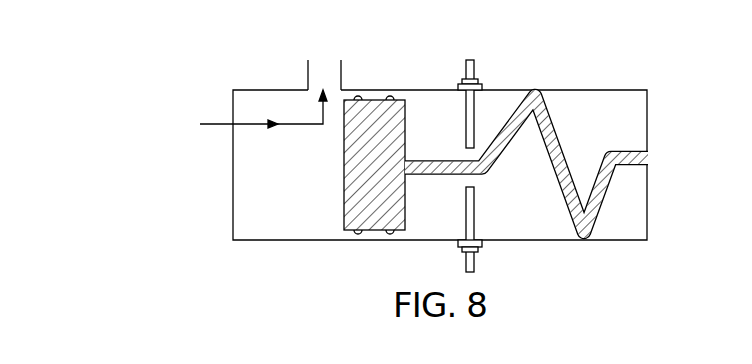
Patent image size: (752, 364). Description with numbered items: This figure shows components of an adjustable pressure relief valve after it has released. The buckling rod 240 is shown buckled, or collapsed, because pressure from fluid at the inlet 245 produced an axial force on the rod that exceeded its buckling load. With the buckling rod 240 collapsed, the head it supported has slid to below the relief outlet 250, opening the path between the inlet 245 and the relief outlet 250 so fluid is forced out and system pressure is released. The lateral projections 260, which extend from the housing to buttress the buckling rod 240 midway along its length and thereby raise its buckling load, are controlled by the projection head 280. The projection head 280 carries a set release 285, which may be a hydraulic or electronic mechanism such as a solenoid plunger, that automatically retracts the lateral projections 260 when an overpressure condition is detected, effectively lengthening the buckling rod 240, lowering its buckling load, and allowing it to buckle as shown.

The buckling rod 240 is at (552, 130).
The inlet 245 is at (214, 125).
The relief outlet 250 is at (324, 70).
The lateral projections 260 is at (465, 118).
The projection head 280 is at (470, 60).
The set release 285 is at (483, 88).